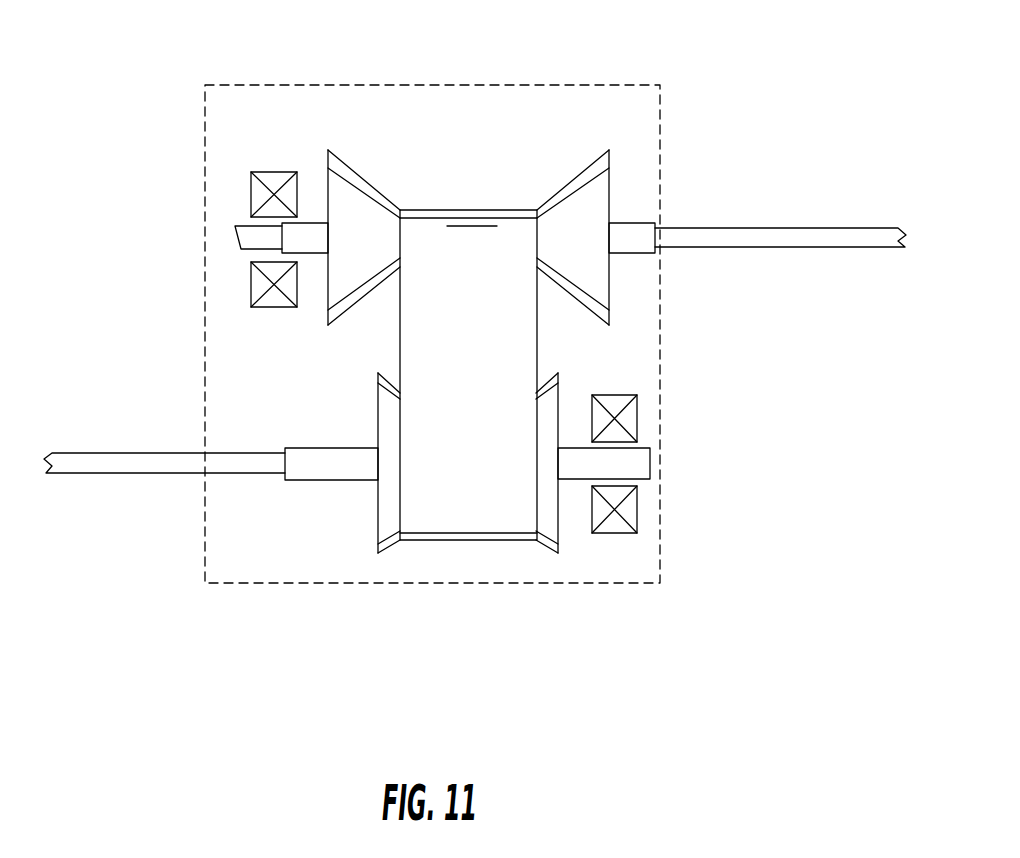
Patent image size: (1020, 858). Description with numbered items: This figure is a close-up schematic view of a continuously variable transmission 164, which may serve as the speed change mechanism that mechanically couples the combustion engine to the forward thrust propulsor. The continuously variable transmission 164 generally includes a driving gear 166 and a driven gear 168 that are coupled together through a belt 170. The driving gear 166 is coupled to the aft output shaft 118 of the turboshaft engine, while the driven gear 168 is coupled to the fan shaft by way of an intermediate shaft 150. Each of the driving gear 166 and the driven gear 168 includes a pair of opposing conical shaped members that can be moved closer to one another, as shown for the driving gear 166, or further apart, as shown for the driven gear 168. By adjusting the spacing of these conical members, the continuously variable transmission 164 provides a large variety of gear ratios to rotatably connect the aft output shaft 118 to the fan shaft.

The continuously variable transmission 164 is at (158, 113).
The driven gear 168 is at (467, 171).
The driving gear 166 is at (441, 505).
The belt 170 is at (525, 362).
The intermediate shaft 150 is at (780, 247).
The aft output shaft 118 is at (97, 473).